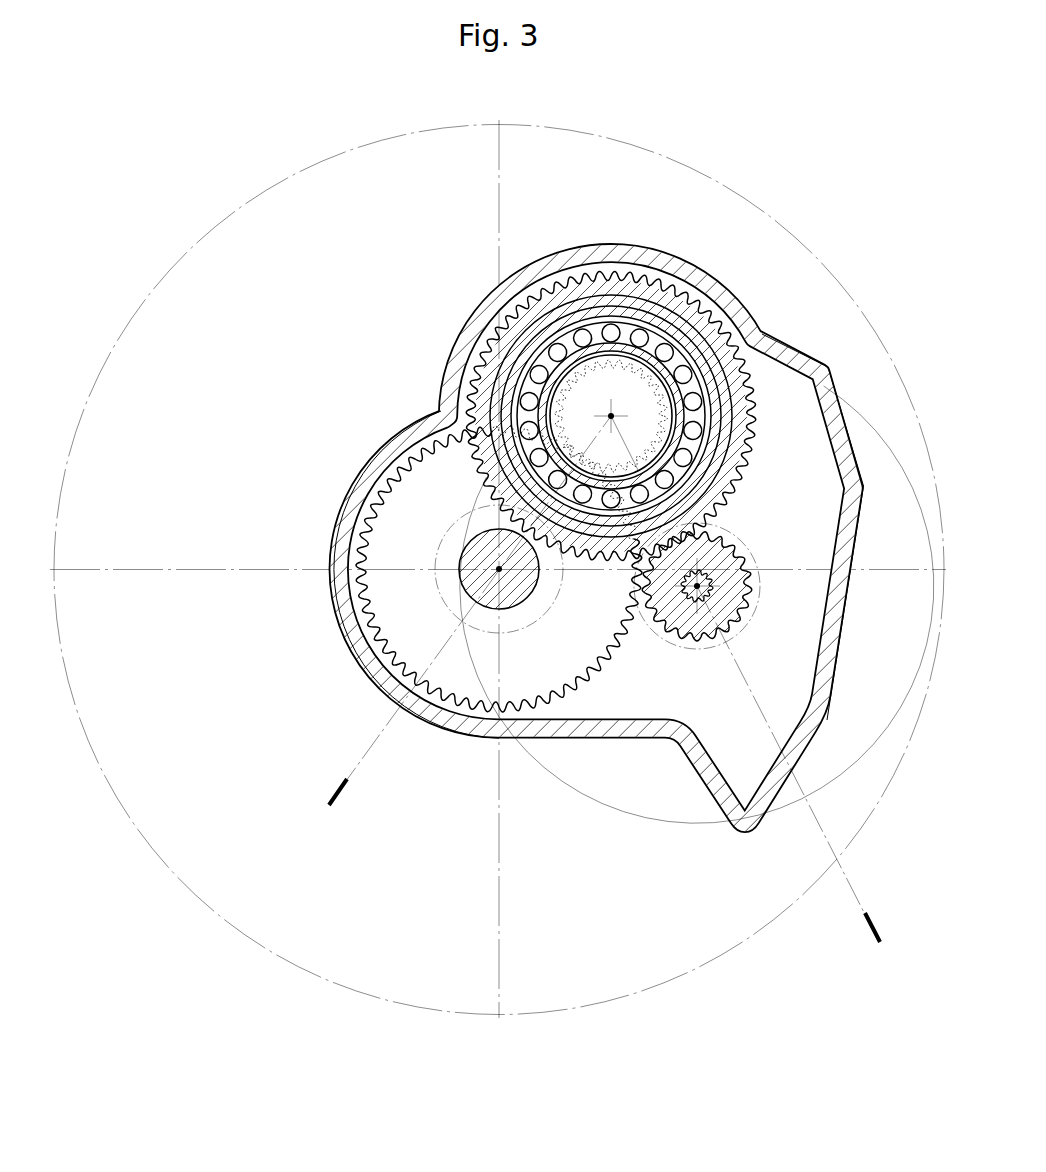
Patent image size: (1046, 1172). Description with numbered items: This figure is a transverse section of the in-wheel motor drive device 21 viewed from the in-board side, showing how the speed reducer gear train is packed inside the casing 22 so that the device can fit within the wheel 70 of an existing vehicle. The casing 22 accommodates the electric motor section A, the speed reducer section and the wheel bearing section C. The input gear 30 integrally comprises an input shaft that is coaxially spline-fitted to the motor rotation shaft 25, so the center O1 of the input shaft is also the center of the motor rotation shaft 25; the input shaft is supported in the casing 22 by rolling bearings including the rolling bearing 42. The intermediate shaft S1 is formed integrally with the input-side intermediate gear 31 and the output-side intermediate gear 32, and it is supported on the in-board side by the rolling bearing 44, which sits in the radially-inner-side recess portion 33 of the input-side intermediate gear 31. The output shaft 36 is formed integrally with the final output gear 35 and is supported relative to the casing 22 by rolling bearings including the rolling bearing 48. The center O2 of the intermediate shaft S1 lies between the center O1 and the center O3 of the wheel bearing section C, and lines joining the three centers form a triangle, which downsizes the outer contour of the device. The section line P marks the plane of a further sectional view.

The wheel 70 is at (721, 181).
The in-wheel motor drive device 21 is at (562, 250).
The casing 22 is at (720, 281).
The wheel bearing section C is at (334, 614).
The electric motor section A is at (850, 763).
The final output gear 35 is at (394, 661).
The rolling bearing 48 is at (434, 588).
The output shaft 36 is at (521, 588).
The center of the wheel bearing section O3 is at (499, 569).
The rolling bearing 42 is at (750, 549).
The input gear 30 is at (733, 621).
The motor rotation shaft 25 is at (716, 580).
The center of the input shaft O1 is at (697, 586).
The input-side intermediate gear 31 is at (603, 266).
The radially-inner-side recess portion 33 is at (515, 298).
The intermediate shaft S1 is at (463, 388).
The rolling bearing 44 is at (647, 322).
The output-side intermediate gear 32 is at (700, 399).
The center of the intermediate shaft O2 is at (611, 416).
The section line P- P is at (347, 790).